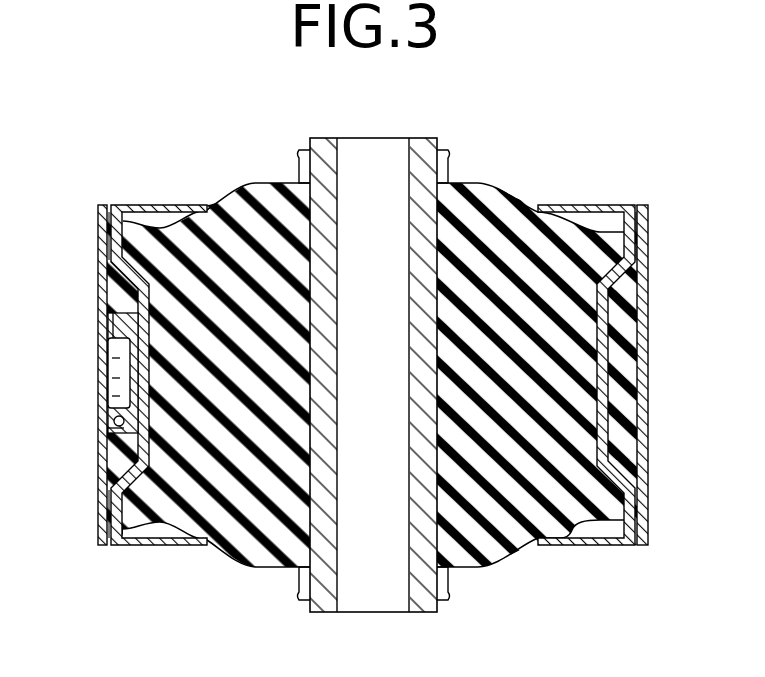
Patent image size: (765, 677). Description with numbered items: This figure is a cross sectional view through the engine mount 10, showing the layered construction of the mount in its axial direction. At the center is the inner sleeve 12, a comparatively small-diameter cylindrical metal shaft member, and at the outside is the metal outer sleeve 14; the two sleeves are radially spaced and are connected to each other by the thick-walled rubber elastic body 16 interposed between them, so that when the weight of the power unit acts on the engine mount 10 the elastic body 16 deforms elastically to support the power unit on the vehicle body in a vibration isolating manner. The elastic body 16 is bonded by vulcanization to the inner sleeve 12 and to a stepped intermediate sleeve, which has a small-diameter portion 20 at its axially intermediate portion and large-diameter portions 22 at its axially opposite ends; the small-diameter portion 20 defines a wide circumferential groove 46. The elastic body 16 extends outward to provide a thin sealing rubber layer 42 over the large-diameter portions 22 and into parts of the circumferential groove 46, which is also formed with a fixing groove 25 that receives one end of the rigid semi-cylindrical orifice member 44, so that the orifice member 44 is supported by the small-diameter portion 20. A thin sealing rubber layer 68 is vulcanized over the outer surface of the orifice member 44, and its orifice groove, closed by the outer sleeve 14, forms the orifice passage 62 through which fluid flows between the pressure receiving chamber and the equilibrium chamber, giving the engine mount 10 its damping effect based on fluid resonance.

The engine mount 10 is at (505, 128).
The inner sleeve 12 is at (305, 152).
The outer sleeve 14 is at (645, 363).
The elastic body 16 is at (518, 223).
The small-diameter portion 20 is at (600, 306).
The large-diameter portion 22 is at (110, 230).
The fixing groove 25 is at (107, 430).
The sealing rubber layer 42 is at (645, 248).
The orifice member 44 is at (107, 428).
The circumferential groove 46 is at (633, 383).
The orifice passage 62 is at (120, 382).
The sealing rubber layer 68 is at (108, 324).